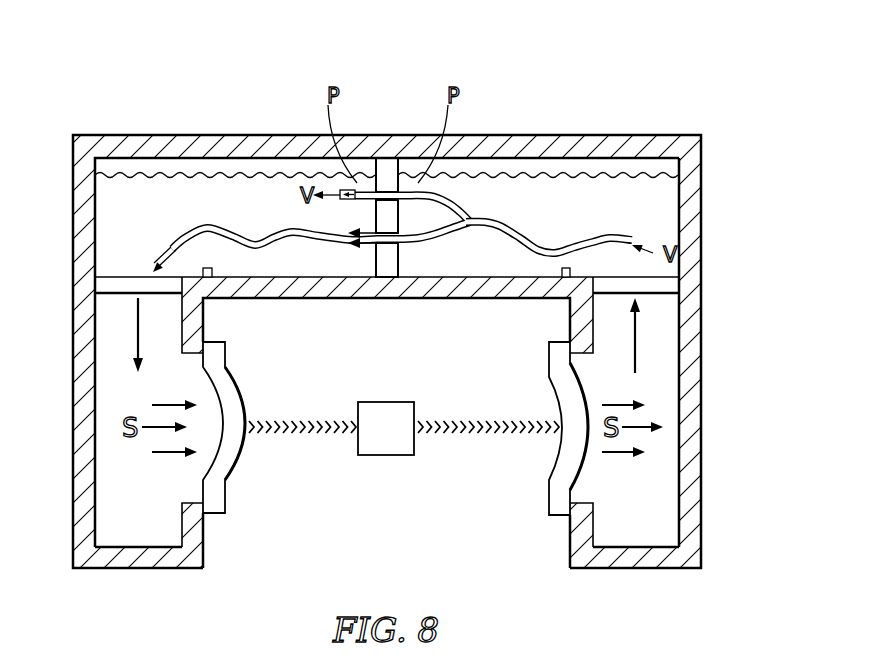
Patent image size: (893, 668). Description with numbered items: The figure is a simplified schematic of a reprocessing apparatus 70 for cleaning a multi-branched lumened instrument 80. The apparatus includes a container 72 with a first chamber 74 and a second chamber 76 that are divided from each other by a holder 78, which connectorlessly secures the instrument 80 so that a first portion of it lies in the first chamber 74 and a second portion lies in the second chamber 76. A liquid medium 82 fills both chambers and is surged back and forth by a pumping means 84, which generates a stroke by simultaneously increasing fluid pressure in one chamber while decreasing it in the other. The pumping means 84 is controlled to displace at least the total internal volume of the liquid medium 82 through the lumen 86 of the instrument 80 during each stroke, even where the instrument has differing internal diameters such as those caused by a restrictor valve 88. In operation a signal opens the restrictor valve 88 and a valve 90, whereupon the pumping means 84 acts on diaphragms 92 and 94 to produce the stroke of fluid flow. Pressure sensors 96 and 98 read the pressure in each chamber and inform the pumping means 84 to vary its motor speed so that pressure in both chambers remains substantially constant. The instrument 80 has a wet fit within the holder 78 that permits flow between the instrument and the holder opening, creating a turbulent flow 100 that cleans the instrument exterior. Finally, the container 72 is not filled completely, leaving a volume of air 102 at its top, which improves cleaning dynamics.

The reprocessing apparatus 70 is at (181, 58).
The container 72 is at (153, 181).
The first chamber 74 is at (210, 214).
The second chamber 76 is at (567, 210).
The holder 78 is at (398, 213).
The multi-branched lumened instrument 80 is at (255, 240).
The liquid medium 82 is at (662, 222).
The pumping means 84 is at (388, 402).
The lumen 86 is at (555, 252).
The restrictor valve 88 is at (127, 274).
The valve 90 is at (662, 297).
The diaphragm 92 is at (228, 498).
The diaphragm 94 is at (549, 497).
The pressure sensor 96 is at (213, 275).
The pressure sensor 98 is at (562, 273).
The turbulent flow 100 is at (372, 198).
The volume of air 102 is at (650, 167).